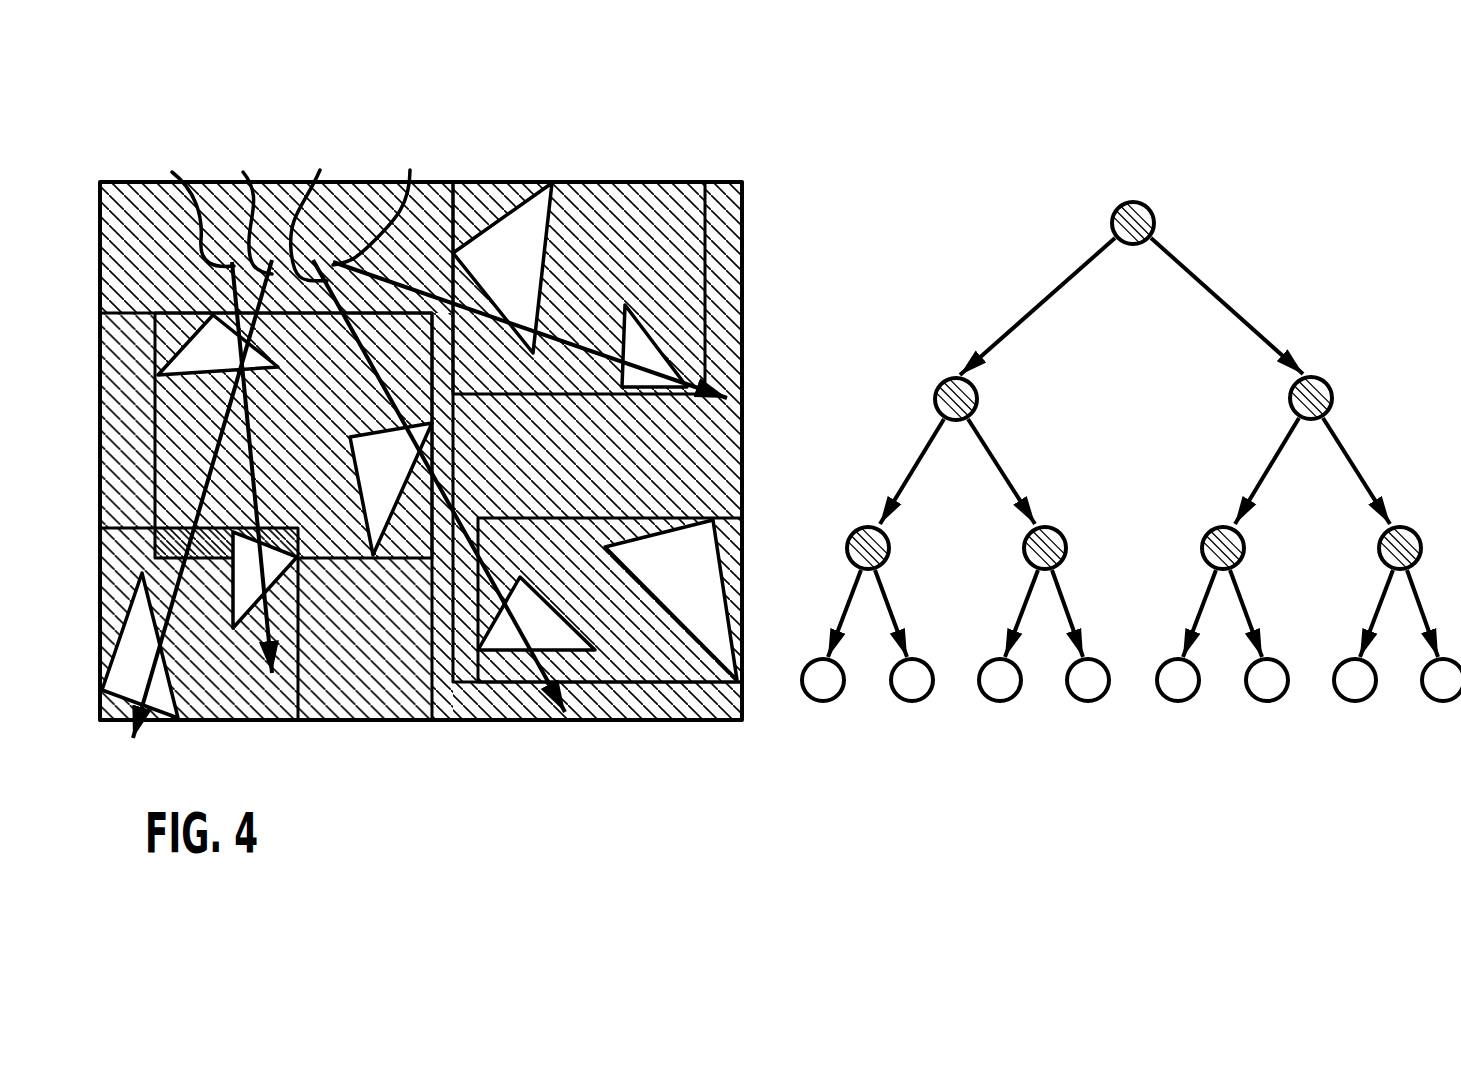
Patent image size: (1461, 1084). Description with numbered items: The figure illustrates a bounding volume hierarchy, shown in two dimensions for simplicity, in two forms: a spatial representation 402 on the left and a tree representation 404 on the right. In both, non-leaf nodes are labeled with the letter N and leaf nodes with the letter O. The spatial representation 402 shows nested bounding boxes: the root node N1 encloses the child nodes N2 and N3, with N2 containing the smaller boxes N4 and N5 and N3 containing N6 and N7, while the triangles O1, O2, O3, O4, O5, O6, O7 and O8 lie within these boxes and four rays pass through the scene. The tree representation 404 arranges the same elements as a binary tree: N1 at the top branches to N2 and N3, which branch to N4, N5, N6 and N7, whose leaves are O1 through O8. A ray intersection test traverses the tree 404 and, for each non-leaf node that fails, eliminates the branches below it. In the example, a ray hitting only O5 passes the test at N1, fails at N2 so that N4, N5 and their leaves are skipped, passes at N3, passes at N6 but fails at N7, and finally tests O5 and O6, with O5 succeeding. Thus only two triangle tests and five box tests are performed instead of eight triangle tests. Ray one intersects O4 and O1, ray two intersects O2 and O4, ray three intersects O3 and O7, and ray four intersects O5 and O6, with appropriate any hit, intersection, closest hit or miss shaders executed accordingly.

The spatial representation 402 is at (421, 380).
The tree representation 404 is at (918, 140).
The non-leaf node N1 is at (421, 451).
The non-leaf node N2 is at (266, 516).
The non-leaf node N3 is at (597, 432).
The non-leaf node N4 is at (199, 624).
The non-leaf node N5 is at (293, 435).
The non-leaf node N6 is at (579, 288).
The non-leaf node N7 is at (610, 600).
The leaf node O1 is at (140, 645).
The leaf node O2 is at (265, 580).
The leaf node O3 is at (391, 489).
The leaf node O4 is at (218, 345).
The leaf node O5 is at (502, 268).
The leaf node O6 is at (654, 346).
The leaf node O7 is at (536, 613).
The leaf node O8 is at (671, 600).